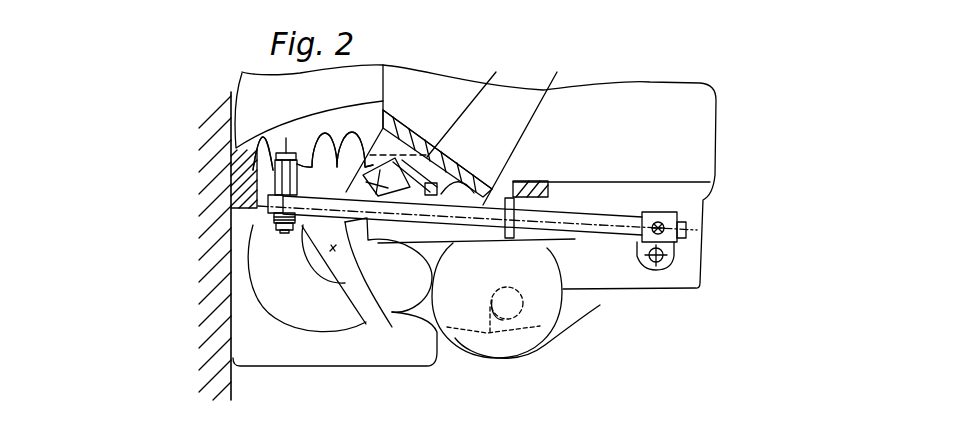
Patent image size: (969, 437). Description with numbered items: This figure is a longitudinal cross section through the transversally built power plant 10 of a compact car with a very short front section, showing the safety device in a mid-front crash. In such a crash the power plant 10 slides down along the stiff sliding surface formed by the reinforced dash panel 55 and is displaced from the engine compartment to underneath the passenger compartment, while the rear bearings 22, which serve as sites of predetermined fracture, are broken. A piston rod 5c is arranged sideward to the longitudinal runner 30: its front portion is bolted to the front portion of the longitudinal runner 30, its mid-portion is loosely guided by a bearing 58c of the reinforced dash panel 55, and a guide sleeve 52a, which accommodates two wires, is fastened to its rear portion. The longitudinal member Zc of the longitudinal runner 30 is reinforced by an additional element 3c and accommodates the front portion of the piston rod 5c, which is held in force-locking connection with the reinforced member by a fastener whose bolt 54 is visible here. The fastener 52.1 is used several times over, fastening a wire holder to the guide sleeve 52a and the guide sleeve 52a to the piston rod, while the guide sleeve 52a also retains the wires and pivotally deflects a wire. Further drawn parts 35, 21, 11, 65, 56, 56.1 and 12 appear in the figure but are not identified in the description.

The additional element 3c is at (253, 138).
The bolt 54 is at (266, 169).
The longitudinal runner 30 is at (264, 190).
The frame wall block 35 is at (245, 191).
The lever arm 21 is at (325, 237).
The disc 11 is at (382, 260).
The pivot piece 65 is at (362, 298).
The chute wall 56.1 is at (386, 82).
The reinforced dash panel 55 is at (478, 108).
The piston rod 5c is at (557, 72).
The chute 56 is at (477, 147).
The bearing 58c is at (510, 221).
The guide sleeve 52a is at (655, 218).
The fastener 52.1 is at (663, 230).
The power plant 10 is at (497, 300).
The axle 12 is at (510, 305).
The rear bearings 22 is at (588, 305).
The longitudinal member Zc is at (295, 143).